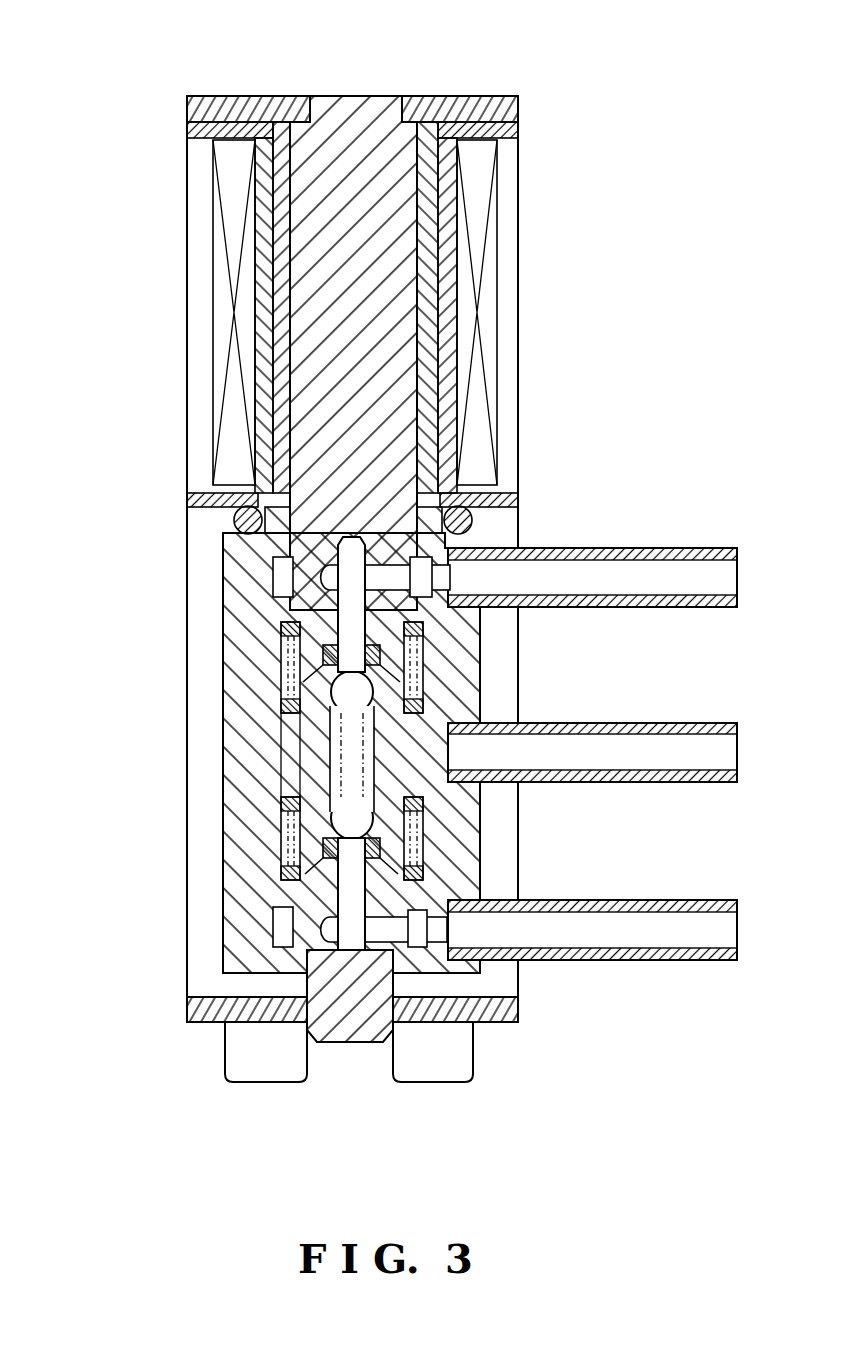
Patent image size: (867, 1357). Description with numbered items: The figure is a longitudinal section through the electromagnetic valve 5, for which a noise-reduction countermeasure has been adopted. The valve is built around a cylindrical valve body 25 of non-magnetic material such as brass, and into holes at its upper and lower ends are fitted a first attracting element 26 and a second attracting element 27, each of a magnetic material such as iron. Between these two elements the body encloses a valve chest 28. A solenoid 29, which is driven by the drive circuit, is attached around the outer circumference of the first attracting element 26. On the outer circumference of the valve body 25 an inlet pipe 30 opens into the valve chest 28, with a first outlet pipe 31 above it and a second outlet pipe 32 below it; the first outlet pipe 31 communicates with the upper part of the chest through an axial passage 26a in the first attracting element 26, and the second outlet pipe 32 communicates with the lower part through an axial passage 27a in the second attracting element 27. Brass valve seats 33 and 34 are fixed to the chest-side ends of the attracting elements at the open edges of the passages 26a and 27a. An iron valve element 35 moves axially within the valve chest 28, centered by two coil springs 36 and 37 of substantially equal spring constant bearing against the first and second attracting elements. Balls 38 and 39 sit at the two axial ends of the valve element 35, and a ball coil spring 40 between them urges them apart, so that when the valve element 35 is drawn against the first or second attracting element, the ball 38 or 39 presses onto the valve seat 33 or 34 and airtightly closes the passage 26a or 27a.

The electromagnetic valve 5 is at (326, 88).
The valve body 25 is at (223, 638).
The first attracting element 26 is at (297, 328).
The axial passage 26a is at (345, 578).
The second attracting element 27 is at (350, 1042).
The axial passage 27a is at (285, 920).
The valve chest 28 is at (338, 752).
The solenoid 29 is at (500, 322).
The inlet pipe 30 is at (682, 723).
The first outlet pipe 31 is at (695, 548).
The second outlet pipe 32 is at (680, 900).
The valve seat 33 is at (288, 658).
The valve seat 34 is at (290, 848).
The valve element 35 is at (300, 726).
The coil spring 36 is at (425, 640).
The coil spring 37 is at (440, 873).
The ball 38 is at (408, 678).
The ball 39 is at (428, 830).
The ball coil spring 40 is at (305, 797).